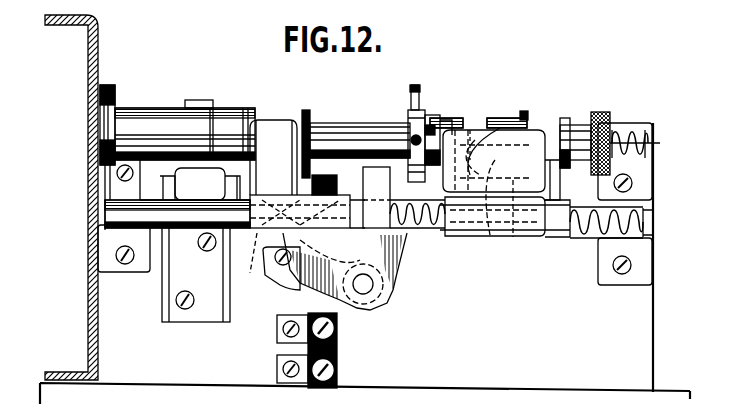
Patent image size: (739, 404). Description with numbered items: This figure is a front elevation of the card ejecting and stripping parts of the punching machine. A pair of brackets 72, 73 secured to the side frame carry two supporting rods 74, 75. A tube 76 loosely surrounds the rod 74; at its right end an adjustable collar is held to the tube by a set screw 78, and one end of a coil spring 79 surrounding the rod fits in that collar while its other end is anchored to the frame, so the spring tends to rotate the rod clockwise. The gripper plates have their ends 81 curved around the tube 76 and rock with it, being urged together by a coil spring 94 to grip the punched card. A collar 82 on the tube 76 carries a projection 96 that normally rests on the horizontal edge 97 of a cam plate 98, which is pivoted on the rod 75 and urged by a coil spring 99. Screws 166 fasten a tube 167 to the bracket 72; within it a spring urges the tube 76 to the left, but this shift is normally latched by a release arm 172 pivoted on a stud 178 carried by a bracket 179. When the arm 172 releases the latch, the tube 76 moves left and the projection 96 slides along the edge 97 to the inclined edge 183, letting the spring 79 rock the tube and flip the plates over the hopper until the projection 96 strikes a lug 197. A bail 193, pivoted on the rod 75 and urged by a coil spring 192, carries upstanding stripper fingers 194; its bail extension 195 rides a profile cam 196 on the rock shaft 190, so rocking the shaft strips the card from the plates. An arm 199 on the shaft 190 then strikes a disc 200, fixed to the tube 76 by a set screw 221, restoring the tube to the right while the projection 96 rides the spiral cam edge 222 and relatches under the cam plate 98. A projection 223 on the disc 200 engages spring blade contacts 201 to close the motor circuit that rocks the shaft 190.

The bracket 72 is at (98, 162).
The bracket 73 is at (609, 278).
The supporting rod 74 is at (650, 144).
The supporting rod 75 is at (650, 222).
The tube 76 is at (327, 125).
The set screw 78 is at (610, 118).
The coil spring 79 is at (628, 128).
The curved ends of gripper plates 81 is at (440, 127).
The collar 82 is at (505, 118).
The coil spring 94 is at (459, 112).
The projection 96 is at (530, 112).
The horizontal edge 97 is at (500, 133).
The cam plate 98 is at (485, 140).
The coil spring 99 is at (403, 235).
The screws 166 is at (118, 92).
The tube 167 is at (162, 110).
The release arm 172 is at (208, 125).
The stud 178 is at (247, 158).
The bracket 179 is at (196, 273).
The inclined edge 183 is at (450, 127).
The rock shaft 190 is at (363, 284).
The coil spring 192 is at (590, 240).
The bail 193 is at (532, 217).
The stripper fingers 194 is at (565, 186).
The bail extension 195 is at (370, 167).
The profile cam 196 is at (298, 290).
The lug 197 is at (513, 180).
The arm 199 is at (248, 266).
The disc 200 is at (427, 112).
The contacts 201 is at (321, 172).
The set screw 221 is at (414, 138).
The cam edge 222 is at (477, 130).
The projection 223 is at (413, 87).